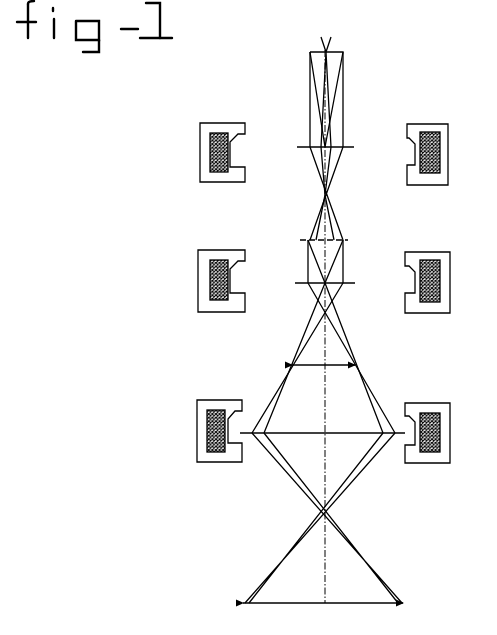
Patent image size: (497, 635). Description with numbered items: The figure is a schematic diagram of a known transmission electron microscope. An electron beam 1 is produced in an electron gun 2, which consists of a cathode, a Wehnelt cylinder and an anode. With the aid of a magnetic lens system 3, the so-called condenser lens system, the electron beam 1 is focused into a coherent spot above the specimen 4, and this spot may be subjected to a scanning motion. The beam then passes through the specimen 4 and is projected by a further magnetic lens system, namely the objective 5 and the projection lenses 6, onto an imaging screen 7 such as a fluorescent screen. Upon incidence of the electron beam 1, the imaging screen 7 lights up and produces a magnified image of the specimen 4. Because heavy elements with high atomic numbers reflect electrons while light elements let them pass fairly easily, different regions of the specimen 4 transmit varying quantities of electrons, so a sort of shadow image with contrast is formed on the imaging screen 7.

The electron beam 1 is at (347, 117).
The electron gun 2 is at (332, 52).
The magnetic lens system 3 is at (202, 179).
The specimen 4 is at (348, 240).
The objective 5 is at (200, 304).
The projection lenses 6 is at (199, 456).
The imaging screen 7 is at (243, 603).